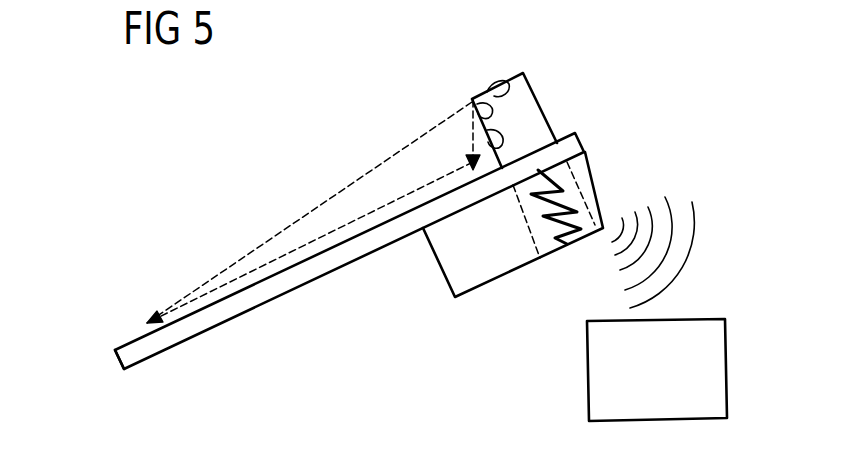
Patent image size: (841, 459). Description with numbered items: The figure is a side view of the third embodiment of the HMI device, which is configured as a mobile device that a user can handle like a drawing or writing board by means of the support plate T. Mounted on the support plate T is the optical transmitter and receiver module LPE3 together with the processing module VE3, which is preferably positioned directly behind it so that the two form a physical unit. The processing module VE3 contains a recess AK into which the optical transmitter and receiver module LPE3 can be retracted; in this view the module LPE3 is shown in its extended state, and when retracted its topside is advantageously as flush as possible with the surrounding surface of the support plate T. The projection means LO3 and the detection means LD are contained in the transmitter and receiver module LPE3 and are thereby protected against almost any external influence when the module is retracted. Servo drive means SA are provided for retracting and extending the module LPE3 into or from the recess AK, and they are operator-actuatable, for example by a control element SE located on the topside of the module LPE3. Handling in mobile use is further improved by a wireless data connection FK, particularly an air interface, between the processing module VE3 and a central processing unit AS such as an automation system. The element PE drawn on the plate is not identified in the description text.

The support plate T is at (120, 359).
The plate element PE is at (335, 245).
The detection means LD is at (482, 138).
The projection means LO3 is at (483, 92).
The control element SE is at (497, 92).
The optical transmitter and receiver module LPE3 is at (523, 110).
The processing module VE3 is at (583, 172).
The recess AK is at (593, 197).
The wireless data connection FK is at (692, 258).
The servo drive means SA is at (562, 247).
The central processing unit AS is at (597, 377).